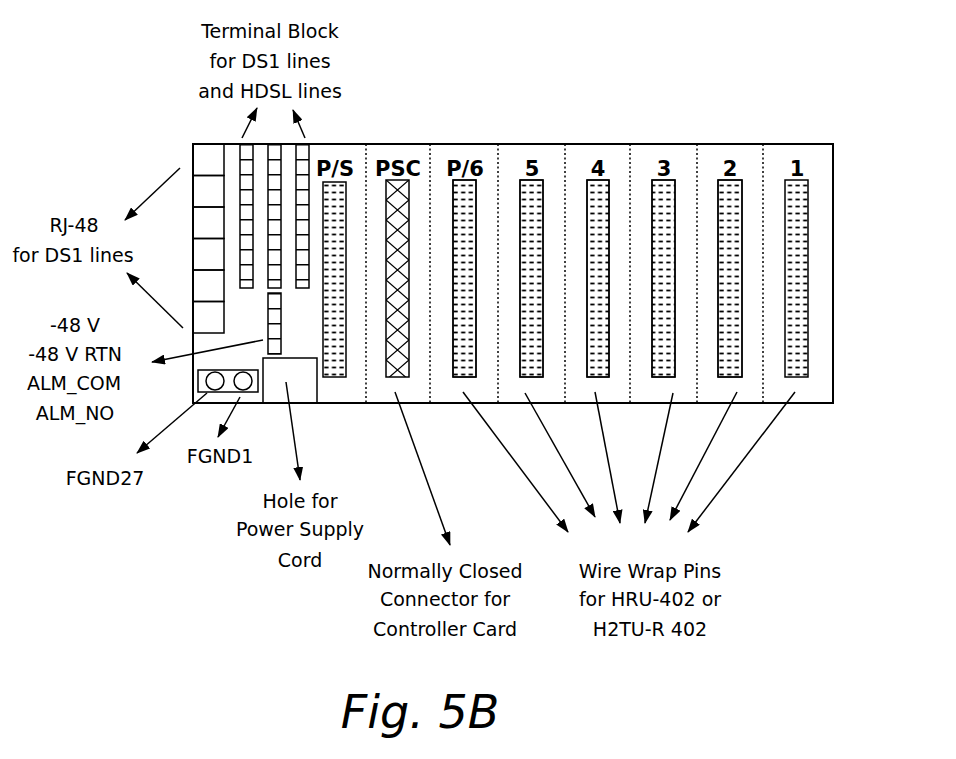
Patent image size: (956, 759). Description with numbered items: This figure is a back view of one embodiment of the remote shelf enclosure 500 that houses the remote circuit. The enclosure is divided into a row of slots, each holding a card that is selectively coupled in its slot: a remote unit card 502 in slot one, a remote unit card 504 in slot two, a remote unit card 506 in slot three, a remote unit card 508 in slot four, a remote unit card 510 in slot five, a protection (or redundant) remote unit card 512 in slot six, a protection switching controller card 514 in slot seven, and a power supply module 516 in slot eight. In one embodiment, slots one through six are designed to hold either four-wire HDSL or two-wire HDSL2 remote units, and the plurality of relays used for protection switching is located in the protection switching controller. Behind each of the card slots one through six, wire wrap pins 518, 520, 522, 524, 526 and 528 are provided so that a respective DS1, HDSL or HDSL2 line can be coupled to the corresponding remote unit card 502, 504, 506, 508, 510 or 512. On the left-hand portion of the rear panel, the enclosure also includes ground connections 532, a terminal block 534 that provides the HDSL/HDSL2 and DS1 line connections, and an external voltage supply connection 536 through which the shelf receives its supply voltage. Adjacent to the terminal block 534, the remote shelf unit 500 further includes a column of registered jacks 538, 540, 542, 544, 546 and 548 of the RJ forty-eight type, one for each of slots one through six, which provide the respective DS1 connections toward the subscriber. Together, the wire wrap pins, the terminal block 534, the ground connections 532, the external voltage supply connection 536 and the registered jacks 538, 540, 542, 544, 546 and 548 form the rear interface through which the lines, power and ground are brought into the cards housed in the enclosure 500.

The remote shelf enclosure 500 is at (801, 86).
The remote unit card 502 is at (822, 176).
The remote unit card 504 is at (718, 152).
The remote unit card 506 is at (660, 147).
The remote unit card 508 is at (598, 147).
The remote unit card 510 is at (540, 147).
The protection remote unit card 512 is at (472, 147).
The protection switching controller card 514 is at (412, 147).
The power supply module 516 is at (322, 147).
The wire wrap pins 518 is at (800, 377).
The wire wrap pins 520 is at (728, 377).
The wire wrap pins 522 is at (660, 377).
The wire wrap pins 524 is at (590, 377).
The wire wrap pins 526 is at (524, 377).
The wire wrap pins 528 is at (459, 377).
The ground connections 532 is at (193, 378).
The terminal block 534 is at (300, 173).
The external voltage supply connection 536 is at (278, 312).
The registered jack RJ-48 538 is at (192, 155).
The registered jack RJ-48 540 is at (192, 192).
The registered jack RJ-48 542 is at (192, 228).
The registered jack RJ-48 544 is at (192, 258).
The registered jack RJ-48 546 is at (192, 292).
The registered jack RJ-48 548 is at (192, 327).